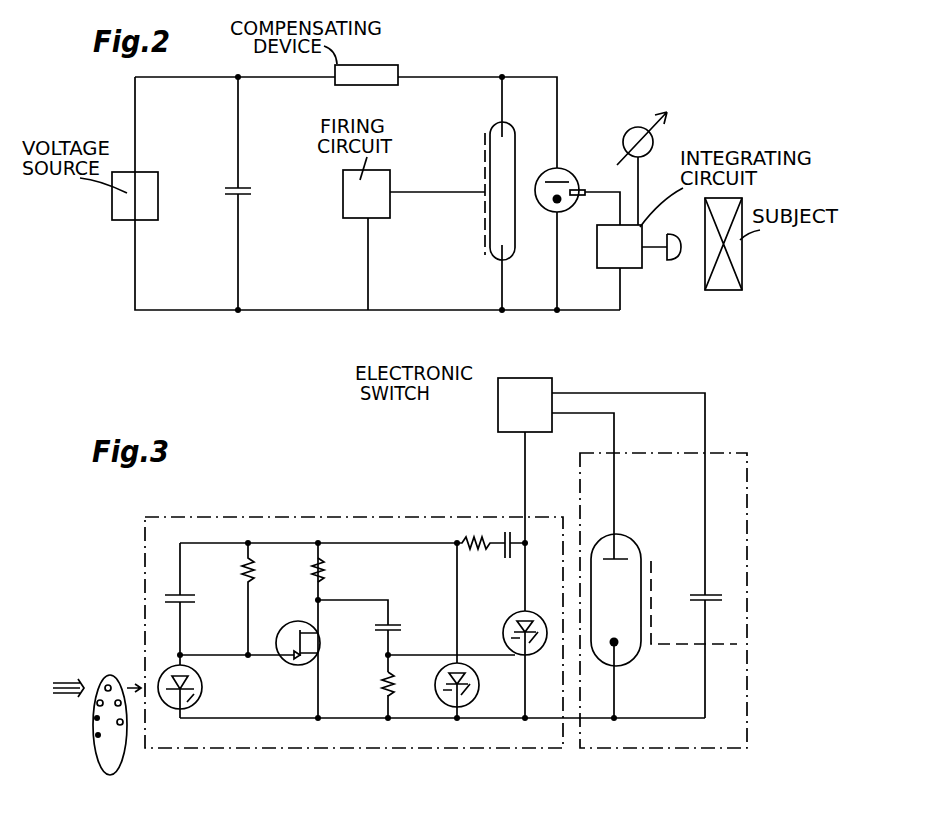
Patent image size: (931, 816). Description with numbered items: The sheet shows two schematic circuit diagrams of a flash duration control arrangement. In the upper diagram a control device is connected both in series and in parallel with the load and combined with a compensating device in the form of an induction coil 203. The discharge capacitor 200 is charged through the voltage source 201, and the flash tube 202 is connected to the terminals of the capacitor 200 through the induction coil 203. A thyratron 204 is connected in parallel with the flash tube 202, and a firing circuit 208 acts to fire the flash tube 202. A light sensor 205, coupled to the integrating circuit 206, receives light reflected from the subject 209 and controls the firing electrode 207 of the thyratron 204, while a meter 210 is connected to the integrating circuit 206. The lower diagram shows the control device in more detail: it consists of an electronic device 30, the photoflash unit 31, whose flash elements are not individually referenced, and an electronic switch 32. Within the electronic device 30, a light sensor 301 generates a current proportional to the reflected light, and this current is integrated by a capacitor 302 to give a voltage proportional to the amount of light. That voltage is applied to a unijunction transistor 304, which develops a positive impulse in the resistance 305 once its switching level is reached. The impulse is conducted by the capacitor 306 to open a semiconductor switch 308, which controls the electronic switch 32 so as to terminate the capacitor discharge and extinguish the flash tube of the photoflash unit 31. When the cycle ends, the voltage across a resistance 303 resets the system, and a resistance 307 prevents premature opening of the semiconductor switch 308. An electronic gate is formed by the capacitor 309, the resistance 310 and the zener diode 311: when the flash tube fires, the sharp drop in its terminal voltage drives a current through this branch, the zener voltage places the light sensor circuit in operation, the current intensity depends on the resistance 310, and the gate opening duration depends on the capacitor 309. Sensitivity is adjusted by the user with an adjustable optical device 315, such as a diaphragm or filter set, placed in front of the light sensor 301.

In FIG. 2, the discharge capacitor 200 is at (233, 200).
In FIG. 2, the voltage source 201 is at (122, 208).
In FIG. 2, the flash tube 202 is at (520, 193).
In FIG. 2, the induction coil 203 is at (372, 72).
In FIG. 2, the thyratron 204 is at (520, 196).
In FIG. 2, the light sensor 205 is at (677, 258).
In FIG. 2, the integrating circuit 206 is at (630, 262).
In FIG. 2, the firing electrode 207 is at (563, 173).
In FIG. 2, the firing circuit 208 is at (357, 210).
In FIG. 2, the subject 209 is at (722, 283).
In FIG. 2, the meter 210 is at (638, 127).
In FIG. 3, the electronic device 30 is at (540, 750).
In FIG. 3, the photoflash unit 31 is at (670, 752).
In FIG. 3, the electronic switch 32 is at (507, 412).
In FIG. 3, the light sensor 301 is at (180, 700).
In FIG. 3, the capacitor 302 is at (170, 594).
In FIG. 3, the resistance 303 is at (240, 558).
In FIG. 3, the unijunction transistor 304 is at (293, 665).
In FIG. 3, the resistance 305 is at (311, 560).
In FIG. 3, the capacitor 306 is at (380, 635).
In FIG. 3, the resistance 307 is at (380, 700).
In FIG. 3, the semiconductor switch 308 is at (525, 640).
In FIG. 3, the capacitor 309 is at (505, 533).
In FIG. 3, the resistance 310 is at (477, 540).
In FIG. 3, the zener diode 311 is at (457, 692).
In FIG. 3, the adjustable optical device 315 is at (103, 678).